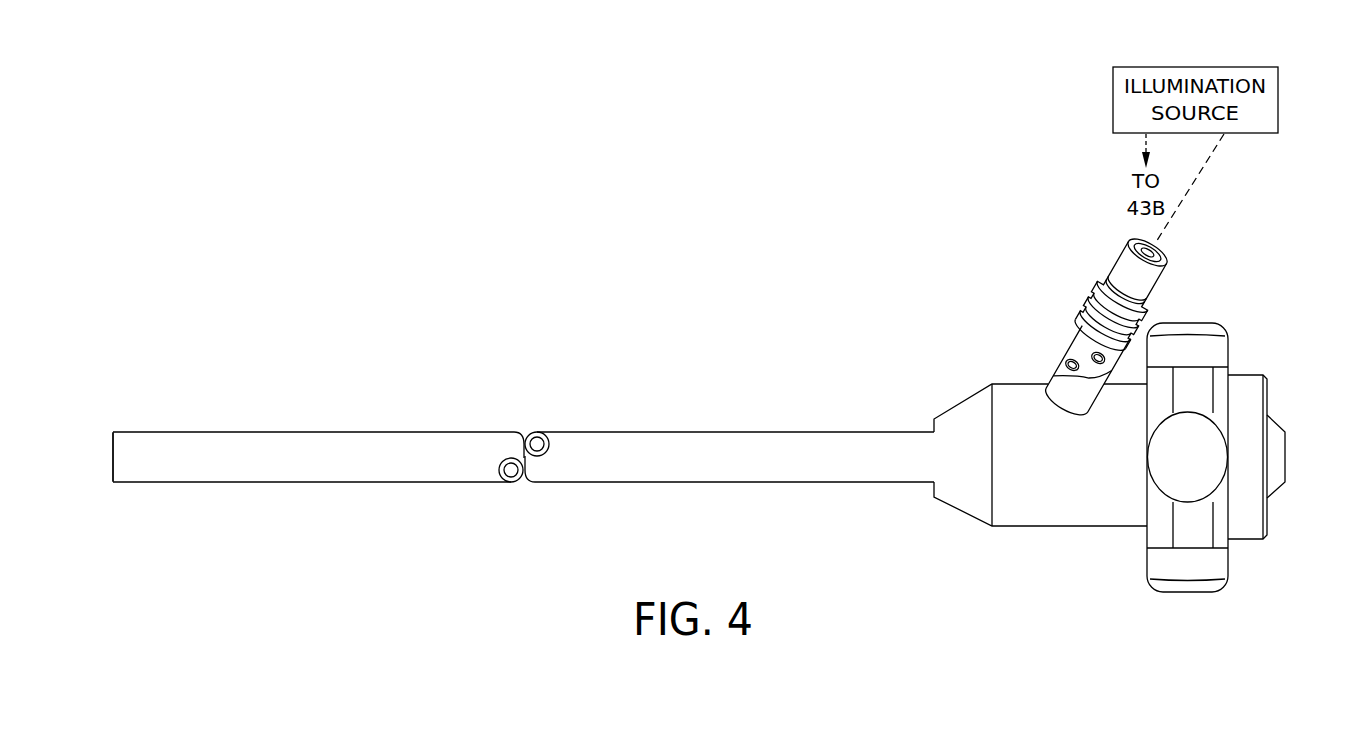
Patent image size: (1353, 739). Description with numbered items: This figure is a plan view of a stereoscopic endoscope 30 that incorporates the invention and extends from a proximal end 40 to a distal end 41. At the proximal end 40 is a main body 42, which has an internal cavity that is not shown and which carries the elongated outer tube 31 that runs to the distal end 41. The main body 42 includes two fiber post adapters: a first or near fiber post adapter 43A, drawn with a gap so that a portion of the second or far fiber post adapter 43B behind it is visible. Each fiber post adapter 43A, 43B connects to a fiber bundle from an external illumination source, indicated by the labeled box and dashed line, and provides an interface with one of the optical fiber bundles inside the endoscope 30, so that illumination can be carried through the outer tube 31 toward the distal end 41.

The stereoscopic endoscope 30 is at (664, 284).
The elongated outer tube 31 is at (356, 472).
The proximal end 40 is at (1330, 468).
The distal end 41 is at (99, 468).
The main body 42 is at (1022, 513).
The first or near fiber post adapter 43A is at (1062, 383).
The second or far fiber post adapter 43B is at (1070, 356).